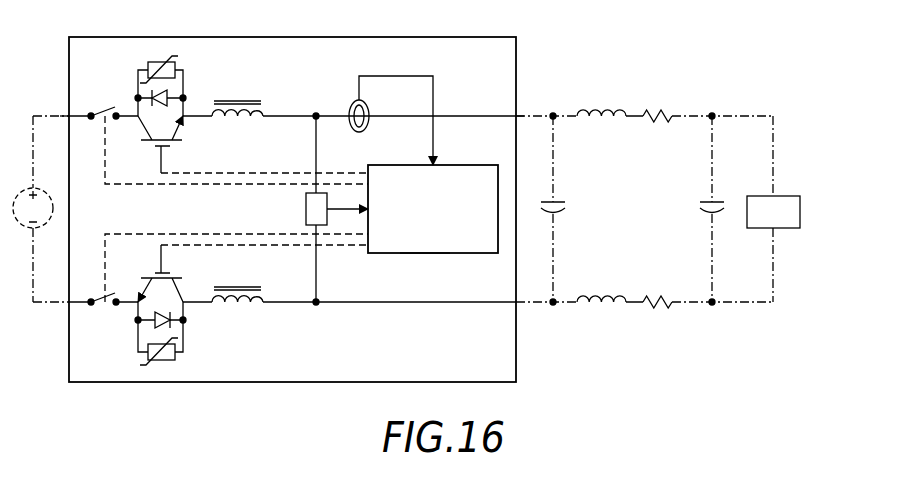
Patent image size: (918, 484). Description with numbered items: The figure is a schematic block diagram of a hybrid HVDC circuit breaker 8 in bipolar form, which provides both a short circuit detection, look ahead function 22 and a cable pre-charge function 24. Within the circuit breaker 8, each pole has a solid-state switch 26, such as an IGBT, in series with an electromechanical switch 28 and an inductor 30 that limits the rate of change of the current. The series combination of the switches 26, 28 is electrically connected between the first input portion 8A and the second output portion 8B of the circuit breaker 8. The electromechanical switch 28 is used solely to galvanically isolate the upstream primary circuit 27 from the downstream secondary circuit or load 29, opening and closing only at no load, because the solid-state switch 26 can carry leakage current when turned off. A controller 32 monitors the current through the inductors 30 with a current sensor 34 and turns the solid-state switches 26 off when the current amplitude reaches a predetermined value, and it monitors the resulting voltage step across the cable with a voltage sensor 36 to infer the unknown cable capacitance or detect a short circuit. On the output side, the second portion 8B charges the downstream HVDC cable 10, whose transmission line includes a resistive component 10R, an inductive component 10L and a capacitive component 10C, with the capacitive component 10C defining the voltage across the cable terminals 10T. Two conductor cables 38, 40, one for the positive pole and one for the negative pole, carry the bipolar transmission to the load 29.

The hybrid HVDC circuit breaker 8 is at (191, 384).
The first input portion 8A is at (68, 113).
The second output portion 8B is at (516, 116).
The HVDC cable 10 is at (659, 54).
The cable terminals 10T is at (556, 119).
The inductive component 10L is at (604, 113).
The resistive component 10R is at (655, 123).
The capacitive component 10C is at (557, 201).
The short circuit detection, look ahead function 22 is at (413, 243).
The cable pre-charge function 24 is at (435, 243).
The solid-state switch 26 is at (156, 146).
The upstream primary circuit 27 is at (28, 228).
The electromechanical switch 28 is at (108, 100).
The load 29 is at (785, 196).
The inductor 30 is at (237, 119).
The controller 32 is at (455, 165).
The current sensor 34 is at (350, 108).
The voltage sensor 36 is at (306, 210).
The conductor cable 38 is at (733, 114).
The conductor cable 40 is at (738, 306).